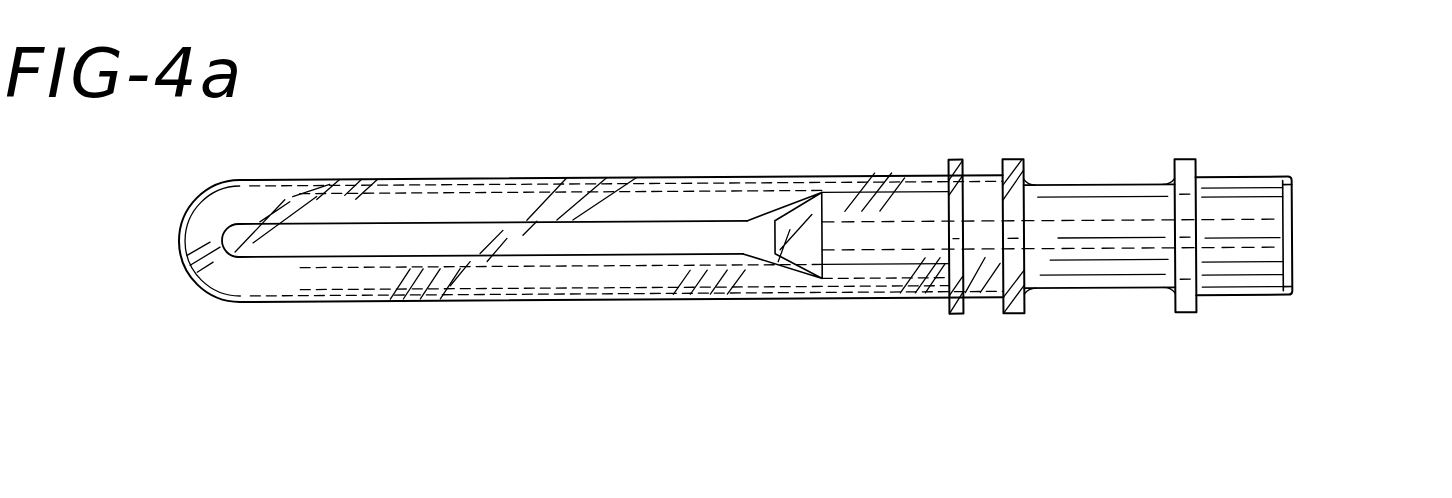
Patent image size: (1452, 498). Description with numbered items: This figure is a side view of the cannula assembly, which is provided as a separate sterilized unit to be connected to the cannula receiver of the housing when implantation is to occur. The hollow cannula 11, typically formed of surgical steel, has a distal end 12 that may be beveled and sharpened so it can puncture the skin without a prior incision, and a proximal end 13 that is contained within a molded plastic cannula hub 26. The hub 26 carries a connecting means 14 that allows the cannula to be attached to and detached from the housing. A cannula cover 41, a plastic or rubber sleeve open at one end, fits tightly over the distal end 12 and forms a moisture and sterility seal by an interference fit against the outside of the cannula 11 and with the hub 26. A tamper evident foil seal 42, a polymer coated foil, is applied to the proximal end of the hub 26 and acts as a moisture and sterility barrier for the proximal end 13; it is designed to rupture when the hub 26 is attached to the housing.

The hollow cannula 11 is at (307, 246).
The distal end of the cannula 12 is at (288, 242).
The proximal end of the cannula 13 is at (1250, 243).
The connecting means 14 is at (1228, 185).
The cannula hub 26 is at (853, 267).
The cannula cover 41 is at (510, 287).
The tamper evident foil seal 42 is at (1288, 213).